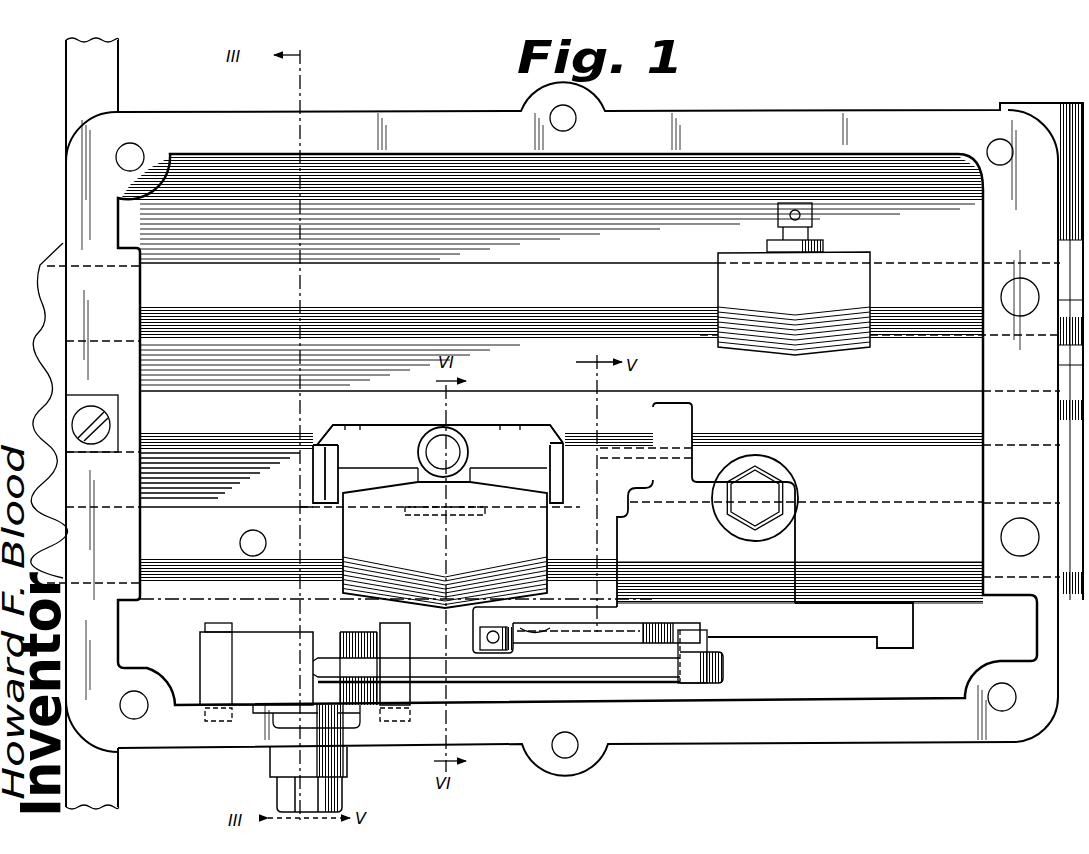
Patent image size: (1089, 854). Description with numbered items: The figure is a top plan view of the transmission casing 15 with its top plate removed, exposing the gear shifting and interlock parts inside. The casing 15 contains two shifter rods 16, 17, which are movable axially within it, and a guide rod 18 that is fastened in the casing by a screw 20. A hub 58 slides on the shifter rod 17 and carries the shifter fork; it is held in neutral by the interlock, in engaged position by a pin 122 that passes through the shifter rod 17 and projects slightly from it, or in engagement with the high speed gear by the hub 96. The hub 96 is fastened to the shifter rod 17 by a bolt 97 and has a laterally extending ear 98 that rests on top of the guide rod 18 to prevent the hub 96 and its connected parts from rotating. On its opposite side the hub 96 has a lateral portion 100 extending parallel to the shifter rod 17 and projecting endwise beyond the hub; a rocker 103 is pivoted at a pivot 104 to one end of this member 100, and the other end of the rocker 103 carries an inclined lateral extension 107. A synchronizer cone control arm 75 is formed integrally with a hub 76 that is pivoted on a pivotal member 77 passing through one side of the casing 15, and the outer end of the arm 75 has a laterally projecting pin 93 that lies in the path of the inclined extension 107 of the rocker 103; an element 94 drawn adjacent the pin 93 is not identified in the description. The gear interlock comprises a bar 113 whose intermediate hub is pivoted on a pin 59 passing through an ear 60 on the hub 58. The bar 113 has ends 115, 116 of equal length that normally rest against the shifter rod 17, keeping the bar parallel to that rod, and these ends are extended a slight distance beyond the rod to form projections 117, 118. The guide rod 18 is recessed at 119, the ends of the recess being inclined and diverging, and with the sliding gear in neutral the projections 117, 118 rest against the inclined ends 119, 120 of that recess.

The transmission casing 15 is at (800, 117).
The shifter rod 16 is at (478, 278).
The shifter rod 17 is at (190, 520).
The guide rod 18 is at (950, 388).
The screw 20 is at (72, 413).
The hub 58 is at (445, 545).
The pin 59 is at (437, 446).
The ear 60 is at (466, 458).
The synchronizer cone control arm 75 is at (496, 679).
The hub 76 is at (297, 622).
The pivotal member 77 is at (335, 800).
The pin 93 is at (700, 692).
The nut 94 is at (720, 649).
The hub 96 is at (775, 552).
The bolt 97 is at (757, 490).
The ear 98 is at (675, 410).
The lateral portion 100 is at (898, 617).
The rocker 103 is at (580, 625).
The pivot 104 is at (538, 636).
The inclined lateral extension 107 is at (657, 640).
The bar 113 is at (385, 450).
The end 115 is at (328, 484).
The end 116 is at (567, 493).
The projection 117 is at (336, 432).
The projection 118 is at (558, 442).
The recess 119 is at (383, 445).
The inclined end 120 is at (520, 430).
The pin 122 is at (254, 531).